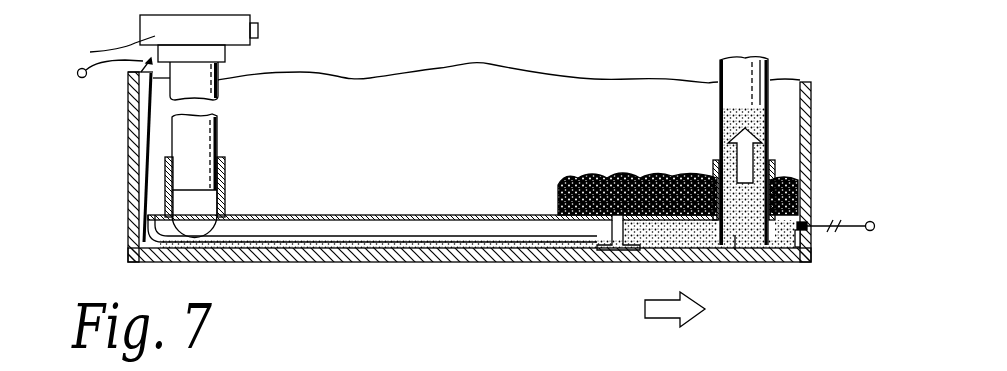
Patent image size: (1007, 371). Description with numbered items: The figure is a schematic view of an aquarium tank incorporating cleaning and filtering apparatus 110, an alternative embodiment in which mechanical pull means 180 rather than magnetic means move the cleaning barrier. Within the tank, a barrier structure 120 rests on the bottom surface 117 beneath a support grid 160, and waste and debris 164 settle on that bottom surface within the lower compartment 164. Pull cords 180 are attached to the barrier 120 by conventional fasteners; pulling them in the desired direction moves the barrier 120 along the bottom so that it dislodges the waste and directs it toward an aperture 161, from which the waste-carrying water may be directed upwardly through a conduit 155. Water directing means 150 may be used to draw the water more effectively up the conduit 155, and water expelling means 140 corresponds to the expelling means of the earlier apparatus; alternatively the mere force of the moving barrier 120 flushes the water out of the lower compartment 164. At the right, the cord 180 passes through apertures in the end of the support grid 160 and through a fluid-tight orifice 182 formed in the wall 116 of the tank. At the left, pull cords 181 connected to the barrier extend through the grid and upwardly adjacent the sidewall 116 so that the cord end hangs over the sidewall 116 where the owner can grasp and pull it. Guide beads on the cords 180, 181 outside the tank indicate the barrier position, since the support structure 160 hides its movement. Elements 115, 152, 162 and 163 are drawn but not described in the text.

The apparatus 110 is at (772, 294).
The tank 115 is at (824, 105).
The sidewall 116 is at (129, 180).
The bottom surface 117 is at (425, 262).
The barrier structure 120 is at (592, 233).
The water expelling means 140 is at (233, 99).
The water directing means 150 is at (128, 32).
The wire 152 is at (105, 48).
The conduit 155 is at (219, 143).
The support grid 160 is at (352, 209).
The aperture 161 is at (678, 178).
The particulate material 162 is at (632, 174).
The cap 163 is at (167, 195).
The waste and debris 164 is at (407, 232).
The pull means 180 is at (735, 250).
The pull cords 181 is at (83, 83).
The fluid-tight orifice 182 is at (826, 217).